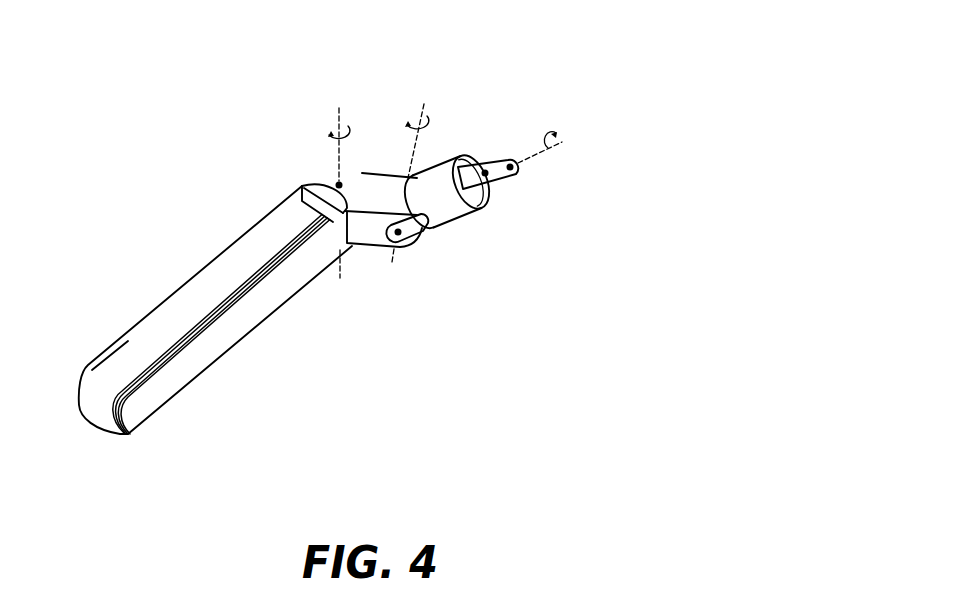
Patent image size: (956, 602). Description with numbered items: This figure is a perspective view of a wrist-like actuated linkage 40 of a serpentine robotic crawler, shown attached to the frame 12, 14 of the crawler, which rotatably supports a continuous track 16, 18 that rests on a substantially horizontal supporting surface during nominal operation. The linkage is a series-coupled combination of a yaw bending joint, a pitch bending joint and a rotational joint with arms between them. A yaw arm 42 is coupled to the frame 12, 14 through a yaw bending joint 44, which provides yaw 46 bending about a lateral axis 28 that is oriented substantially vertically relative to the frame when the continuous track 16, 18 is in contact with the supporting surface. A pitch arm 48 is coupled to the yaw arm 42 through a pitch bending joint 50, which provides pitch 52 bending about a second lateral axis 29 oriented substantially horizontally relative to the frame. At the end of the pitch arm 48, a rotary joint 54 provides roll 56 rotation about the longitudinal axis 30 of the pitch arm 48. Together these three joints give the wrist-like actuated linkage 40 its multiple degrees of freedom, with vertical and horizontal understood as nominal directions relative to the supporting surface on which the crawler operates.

The first frame 12 is at (215, 326).
The second frame 14 is at (172, 387).
The continuous track 16 is at (192, 325).
The continuous track 18 is at (203, 303).
The lateral axis 28 is at (341, 180).
The lateral axis 29 is at (418, 170).
The longitudinal axis 30 is at (560, 145).
The wrist-like actuated linkage 40 is at (573, 63).
The yaw arm 42 is at (370, 236).
The yaw bending joint 44 is at (336, 184).
The yaw 46 is at (322, 138).
The pitch arm 48 is at (454, 210).
The pitch bending joint 50 is at (398, 235).
The pitch 52 is at (430, 129).
The rotary joint 54 is at (480, 200).
The roll 56 is at (541, 164).